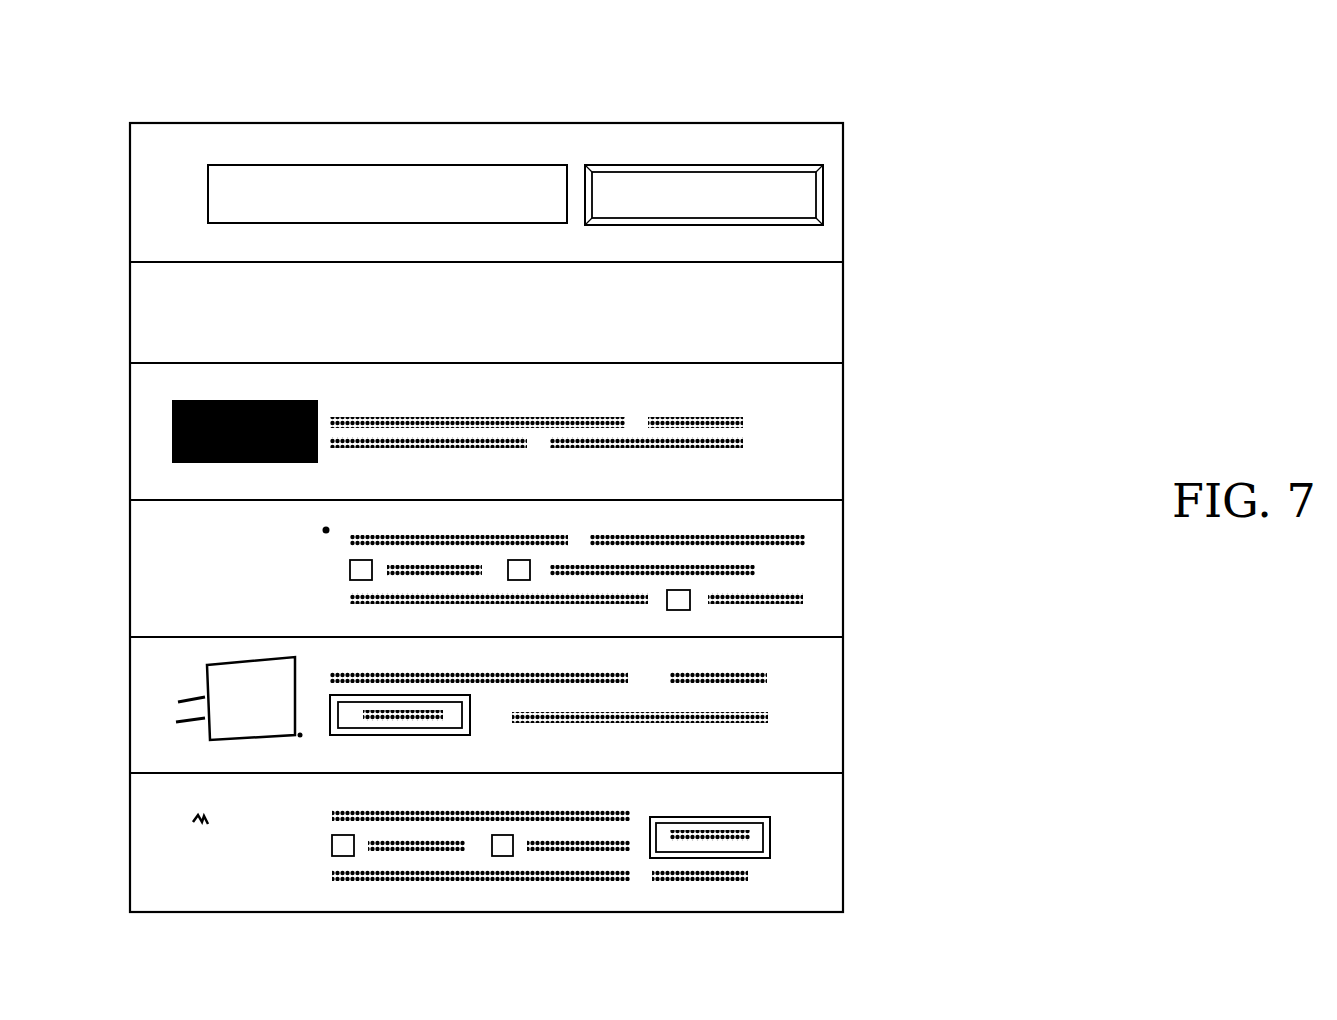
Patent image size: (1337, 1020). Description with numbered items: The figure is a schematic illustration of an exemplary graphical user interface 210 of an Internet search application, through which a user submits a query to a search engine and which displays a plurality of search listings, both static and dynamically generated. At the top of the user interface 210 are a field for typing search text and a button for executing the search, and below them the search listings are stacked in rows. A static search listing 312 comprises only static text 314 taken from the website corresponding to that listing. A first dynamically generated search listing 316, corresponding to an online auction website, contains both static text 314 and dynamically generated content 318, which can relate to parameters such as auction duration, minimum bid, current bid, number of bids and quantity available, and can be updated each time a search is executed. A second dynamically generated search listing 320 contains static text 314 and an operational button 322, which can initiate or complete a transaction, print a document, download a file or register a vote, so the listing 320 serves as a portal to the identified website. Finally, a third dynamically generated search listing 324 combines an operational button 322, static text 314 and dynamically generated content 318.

The user interface 210 is at (768, 121).
The static search listing 312 is at (820, 393).
The static text 314 is at (748, 410).
The first dynamically generated search listing 316 is at (820, 523).
The dynamically generated content 318 is at (668, 608).
The second dynamically generated search listing 320 is at (828, 667).
The operational button 322 is at (452, 735).
The third dynamically generated search listing 324 is at (836, 808).